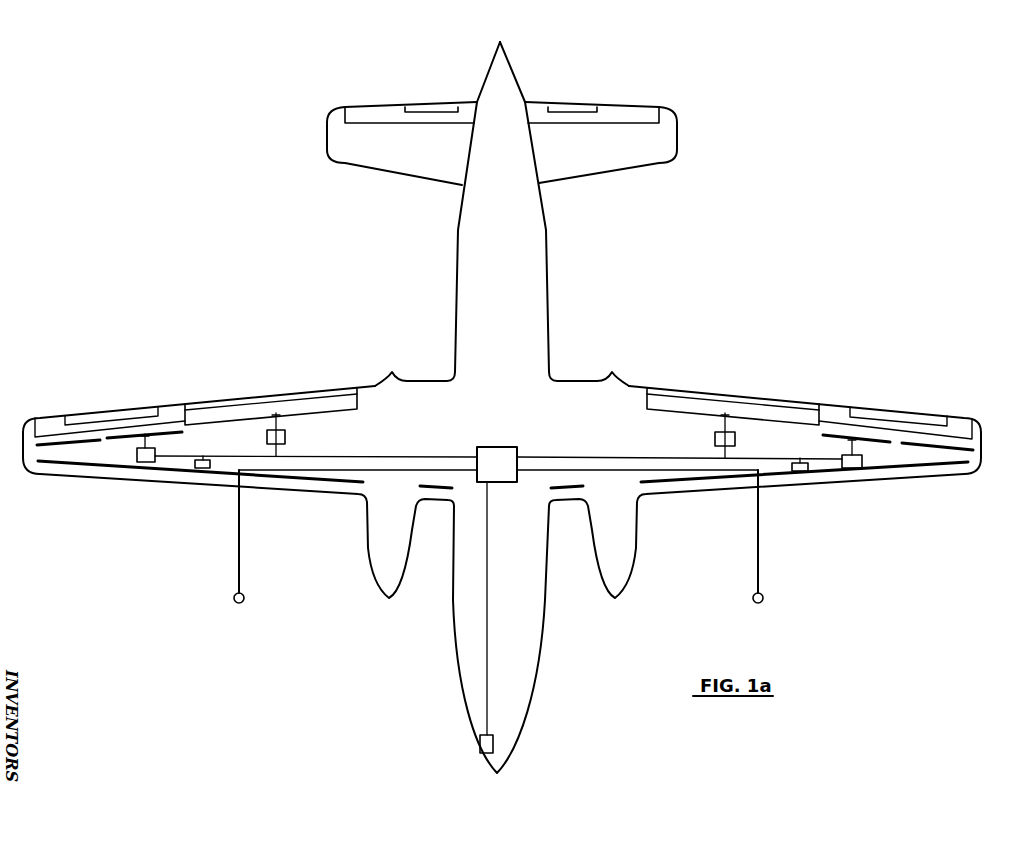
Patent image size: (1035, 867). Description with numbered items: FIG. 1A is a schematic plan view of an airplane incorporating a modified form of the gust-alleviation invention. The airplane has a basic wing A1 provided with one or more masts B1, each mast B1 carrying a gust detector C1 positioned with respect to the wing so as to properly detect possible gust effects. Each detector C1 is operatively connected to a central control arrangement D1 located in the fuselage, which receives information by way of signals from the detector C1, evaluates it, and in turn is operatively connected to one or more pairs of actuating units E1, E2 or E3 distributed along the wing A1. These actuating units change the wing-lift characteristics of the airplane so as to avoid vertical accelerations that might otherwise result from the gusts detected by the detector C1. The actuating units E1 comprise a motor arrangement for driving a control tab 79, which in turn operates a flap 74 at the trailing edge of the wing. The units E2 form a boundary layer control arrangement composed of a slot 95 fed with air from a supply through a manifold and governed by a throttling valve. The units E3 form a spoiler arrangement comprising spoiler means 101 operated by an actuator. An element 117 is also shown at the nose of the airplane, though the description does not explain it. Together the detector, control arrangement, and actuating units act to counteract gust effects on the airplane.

The flap 74 is at (204, 412).
The tab 79 is at (243, 400).
The spoiler means 101 is at (115, 437).
The slot 95 is at (97, 467).
The actuating unit E1 is at (285, 436).
The boundary layer control arrangement E2 is at (203, 459).
The spoiler arrangement E3 is at (137, 455).
The central control arrangement D1 is at (493, 447).
The basic wing A1 is at (330, 494).
The mast B1 is at (237, 517).
The gust detector C1 is at (243, 602).
The nose sensor 117 is at (480, 749).